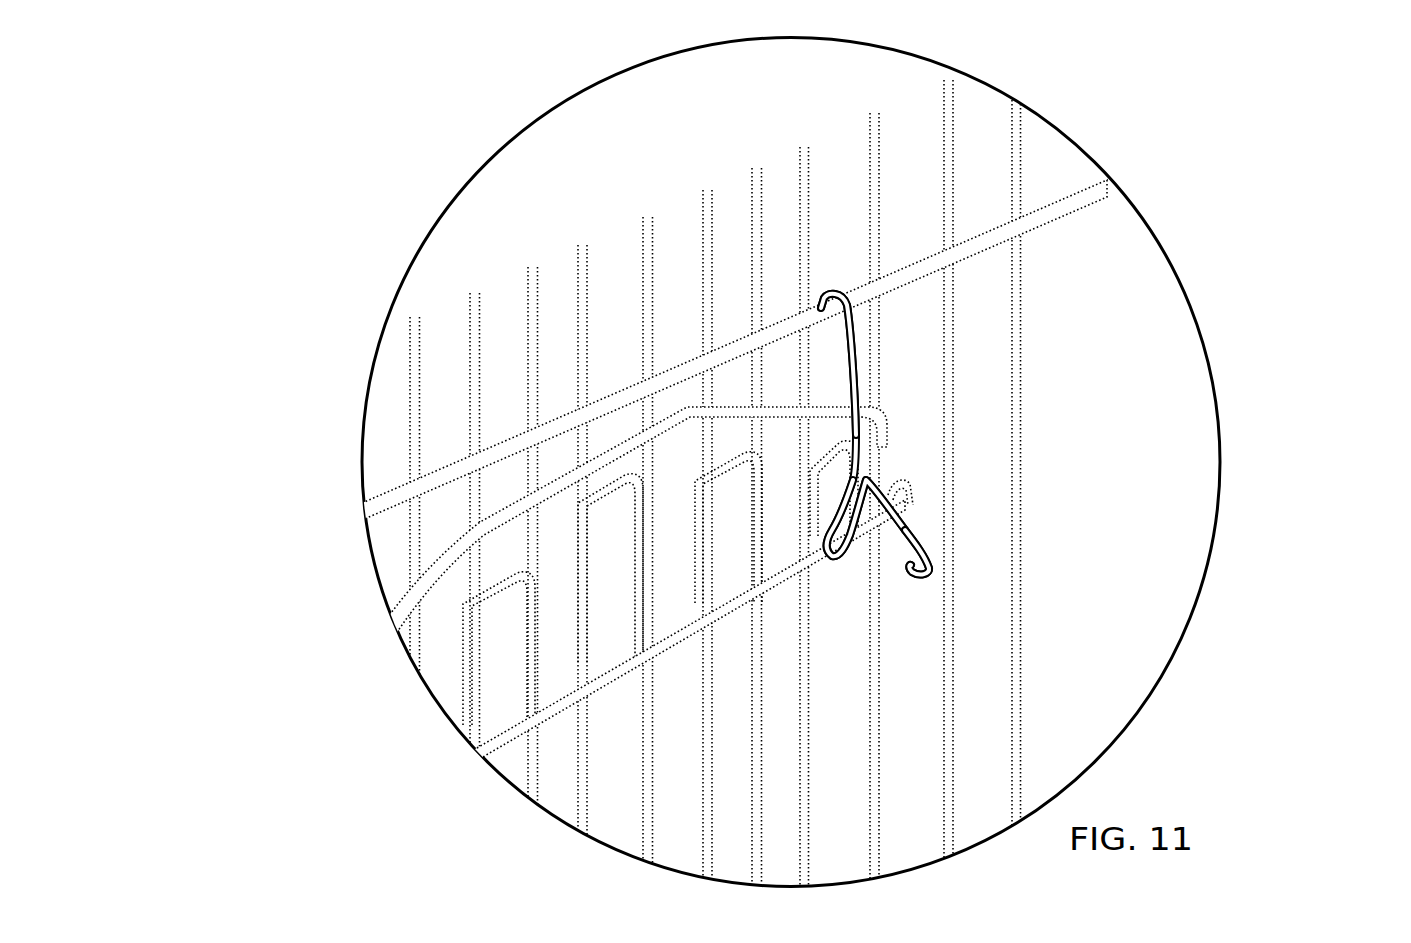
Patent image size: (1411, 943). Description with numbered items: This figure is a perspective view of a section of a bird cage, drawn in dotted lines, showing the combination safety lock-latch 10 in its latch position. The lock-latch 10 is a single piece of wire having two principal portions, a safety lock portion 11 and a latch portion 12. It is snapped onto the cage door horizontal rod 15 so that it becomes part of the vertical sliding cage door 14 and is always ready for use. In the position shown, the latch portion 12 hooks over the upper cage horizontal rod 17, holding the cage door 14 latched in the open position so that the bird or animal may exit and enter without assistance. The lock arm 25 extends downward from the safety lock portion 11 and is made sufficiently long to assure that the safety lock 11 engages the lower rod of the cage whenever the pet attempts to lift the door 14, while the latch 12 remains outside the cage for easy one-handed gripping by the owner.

The combination safety lock-latch 10 is at (918, 473).
The safety lock portion 11 is at (875, 475).
The latch portion 12 is at (818, 292).
The vertical sliding cage door 14 is at (432, 582).
The cage door horizontal rod 15 is at (520, 728).
The upper cage horizontal rod 17 is at (1107, 181).
The lock arm 25 is at (935, 565).